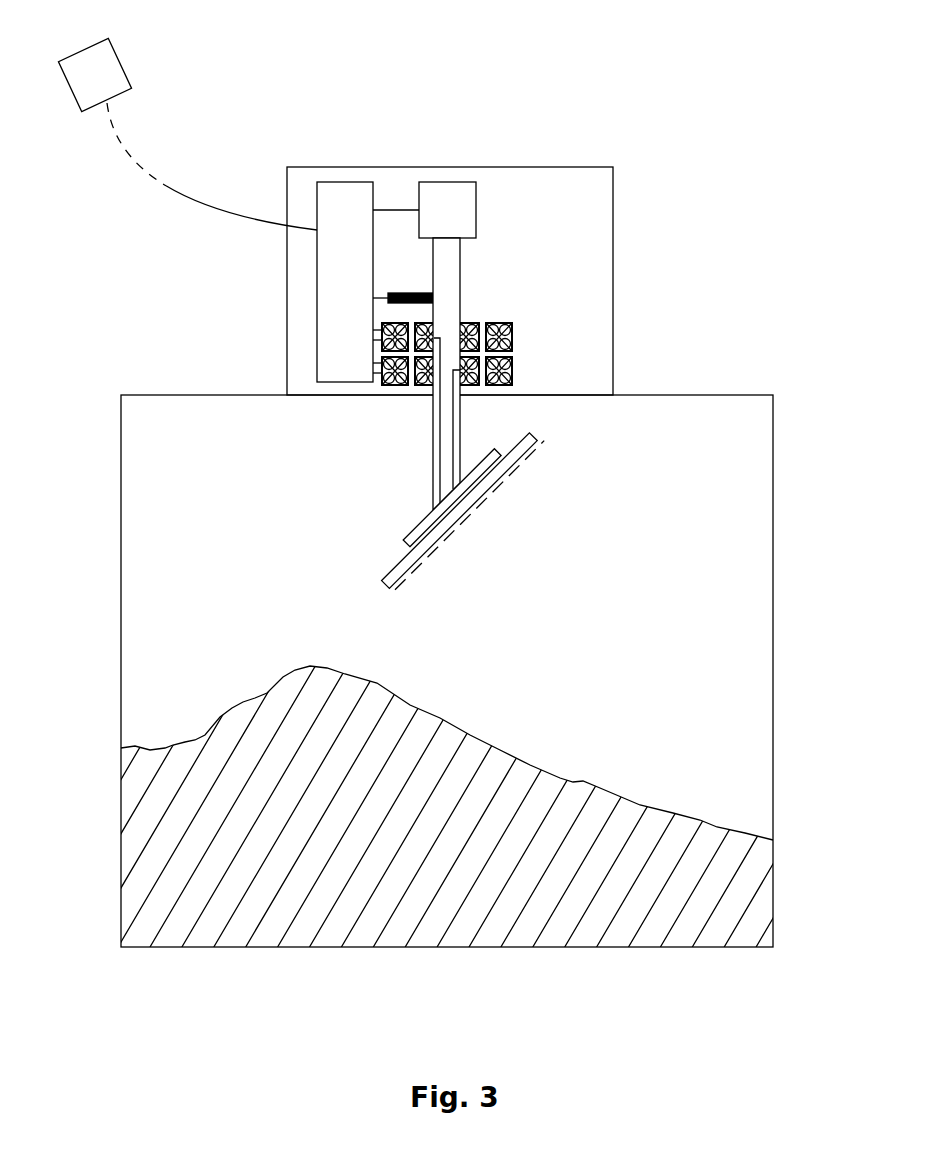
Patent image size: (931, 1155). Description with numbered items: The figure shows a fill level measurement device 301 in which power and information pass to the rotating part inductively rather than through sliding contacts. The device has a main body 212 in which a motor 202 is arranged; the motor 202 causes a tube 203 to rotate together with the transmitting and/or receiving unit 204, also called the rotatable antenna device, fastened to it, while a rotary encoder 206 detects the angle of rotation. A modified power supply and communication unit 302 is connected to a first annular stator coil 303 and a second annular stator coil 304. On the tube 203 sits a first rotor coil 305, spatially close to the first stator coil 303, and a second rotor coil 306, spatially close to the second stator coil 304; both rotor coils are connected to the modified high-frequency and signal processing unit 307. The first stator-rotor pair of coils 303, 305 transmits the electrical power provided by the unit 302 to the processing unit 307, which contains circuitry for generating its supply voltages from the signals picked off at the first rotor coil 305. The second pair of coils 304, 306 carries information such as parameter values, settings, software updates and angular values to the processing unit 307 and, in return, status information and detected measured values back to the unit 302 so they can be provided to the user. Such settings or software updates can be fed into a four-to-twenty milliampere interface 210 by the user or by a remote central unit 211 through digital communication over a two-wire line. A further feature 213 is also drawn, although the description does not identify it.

The motor 202 is at (477, 222).
The tube 203 is at (460, 415).
The transmitting and/or receiving unit 204 is at (540, 432).
The rotary encoder 206 is at (394, 293).
The 4-20 mA interface 210 is at (317, 233).
The remote central unit 211 is at (125, 62).
The main body 212 is at (613, 262).
The wireless link 213 is at (197, 207).
The measurement device 301 is at (680, 118).
The modified power supply and communication unit 302 is at (355, 166).
The first annular stator coil 303 is at (382, 330).
The second annular stator coil 304 is at (382, 365).
The first rotor coil 305 is at (434, 318).
The second rotor coil 306 is at (470, 368).
The modified high-frequency and signal processing unit 307 is at (410, 540).